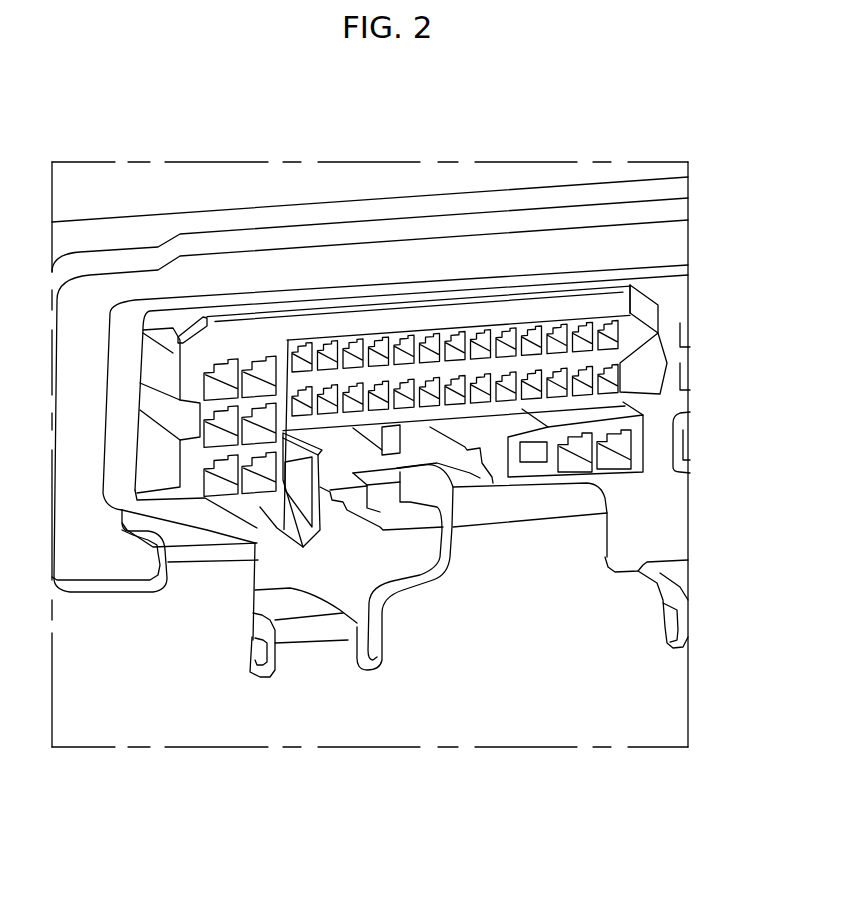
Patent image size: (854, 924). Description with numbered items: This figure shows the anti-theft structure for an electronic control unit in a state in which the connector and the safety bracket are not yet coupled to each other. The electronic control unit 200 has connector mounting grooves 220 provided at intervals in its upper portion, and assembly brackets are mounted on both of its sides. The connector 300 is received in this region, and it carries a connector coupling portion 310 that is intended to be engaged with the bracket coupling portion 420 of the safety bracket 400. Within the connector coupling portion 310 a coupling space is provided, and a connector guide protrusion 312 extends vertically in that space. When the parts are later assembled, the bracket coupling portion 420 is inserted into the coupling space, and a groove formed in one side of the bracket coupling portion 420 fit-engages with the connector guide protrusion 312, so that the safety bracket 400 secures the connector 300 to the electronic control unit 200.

The electronic control unit 200 is at (140, 227).
The connector mounting grooves 220 is at (288, 297).
The connector 300 is at (516, 305).
The connector guide protrusion 312 is at (390, 440).
The connector coupling portion 310 is at (343, 465).
The safety bracket 400 is at (508, 605).
The bracket coupling portion 420 is at (417, 503).